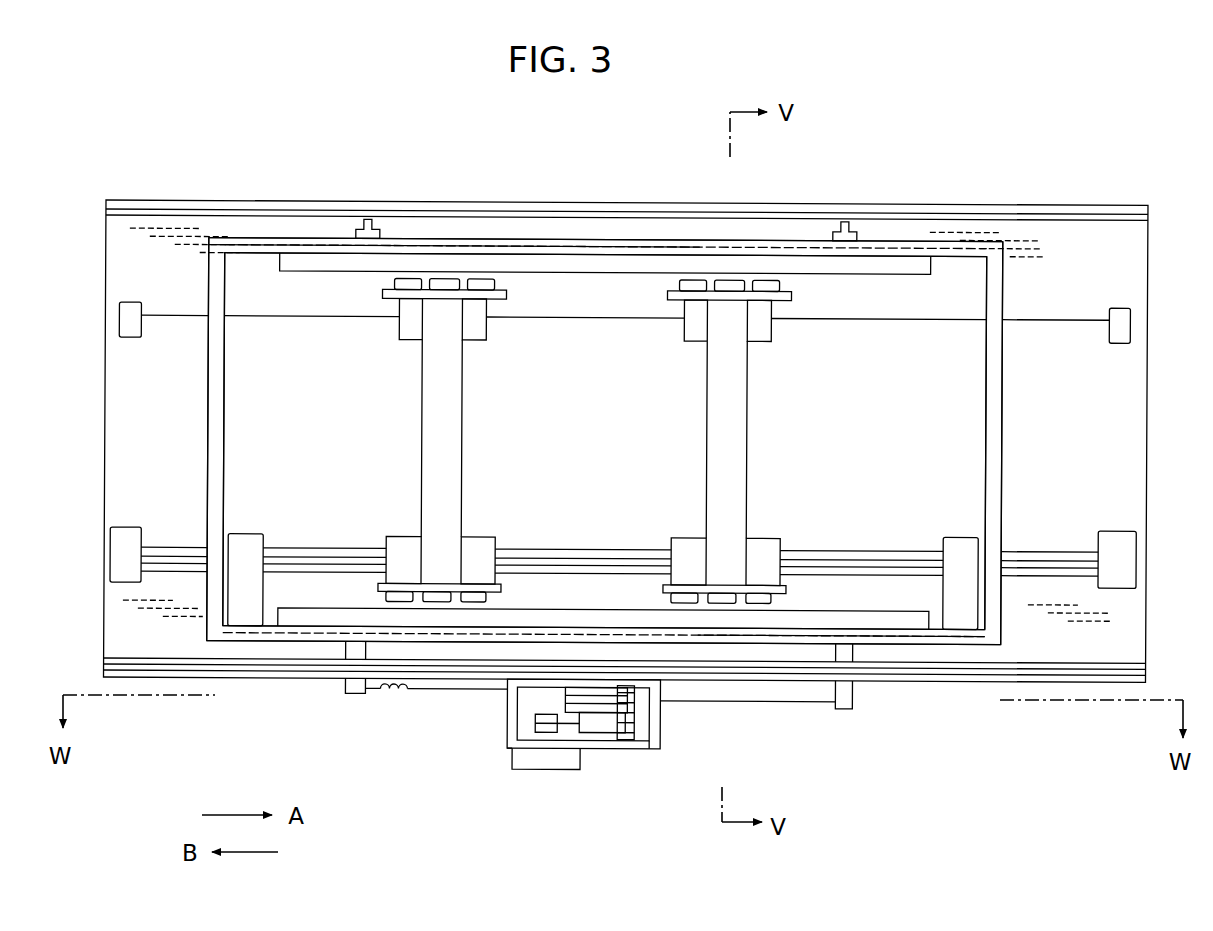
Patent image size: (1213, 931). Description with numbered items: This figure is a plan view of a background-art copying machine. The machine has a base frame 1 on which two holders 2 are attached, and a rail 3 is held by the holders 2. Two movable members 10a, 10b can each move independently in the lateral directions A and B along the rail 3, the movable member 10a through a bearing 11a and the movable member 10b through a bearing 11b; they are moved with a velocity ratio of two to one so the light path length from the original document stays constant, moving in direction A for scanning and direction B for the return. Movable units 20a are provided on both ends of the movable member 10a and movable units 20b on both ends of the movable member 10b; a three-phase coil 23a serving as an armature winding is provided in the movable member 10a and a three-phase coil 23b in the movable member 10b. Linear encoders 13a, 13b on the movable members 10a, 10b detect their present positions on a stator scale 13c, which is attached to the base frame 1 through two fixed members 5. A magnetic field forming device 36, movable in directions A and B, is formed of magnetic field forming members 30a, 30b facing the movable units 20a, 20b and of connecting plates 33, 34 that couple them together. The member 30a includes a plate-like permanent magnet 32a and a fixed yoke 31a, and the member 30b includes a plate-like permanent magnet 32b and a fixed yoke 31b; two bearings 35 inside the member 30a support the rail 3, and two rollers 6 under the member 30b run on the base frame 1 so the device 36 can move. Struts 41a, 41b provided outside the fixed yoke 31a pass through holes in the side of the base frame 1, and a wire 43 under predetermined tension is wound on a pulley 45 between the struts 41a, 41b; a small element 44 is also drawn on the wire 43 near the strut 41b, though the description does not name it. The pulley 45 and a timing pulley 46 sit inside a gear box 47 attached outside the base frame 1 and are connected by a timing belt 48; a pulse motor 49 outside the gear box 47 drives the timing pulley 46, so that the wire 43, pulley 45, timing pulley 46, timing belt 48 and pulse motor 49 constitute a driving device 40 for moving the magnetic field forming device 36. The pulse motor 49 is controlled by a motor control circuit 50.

The base frame 1 is at (178, 200).
The holder 2 is at (140, 527).
The rail 3 is at (1040, 547).
The fixed member 5 is at (120, 312).
The roller 6 is at (370, 217).
The movable member 10a is at (748, 437).
The movable member 10b is at (465, 437).
The bearing 11a is at (770, 540).
The bearing 11b is at (484, 540).
The linear encoder 13a is at (762, 330).
The linear encoder 13b is at (475, 330).
The stator scale 13c is at (885, 318).
The movable unit 20a is at (797, 292).
The movable unit 20b is at (508, 292).
The three-phase coil 23a is at (722, 277).
The three-phase coil 23b is at (438, 277).
The magnetic field forming member 30a is at (903, 632).
The magnetic field forming member 30b is at (968, 238).
The fixed yoke 31a is at (948, 648).
The fixed yoke 31b is at (250, 238).
The plate-like permanent magnet 32a is at (313, 613).
The plate-like permanent magnet 32b is at (903, 256).
The connecting plate 33 is at (209, 388).
The connecting plate 34 is at (1003, 388).
The bearing 35 is at (258, 533).
The magnetic field forming device 36 is at (180, 436).
The driving device 40 is at (445, 770).
The strut 41a is at (853, 707).
The strut 41b is at (348, 693).
The wire 43 is at (778, 700).
The spring 44 is at (395, 690).
The pulley 45 is at (640, 712).
The timing pulley 46 is at (545, 730).
The gear box 47 is at (510, 730).
The timing belt 48 is at (612, 740).
The pulse motor 49 is at (557, 767).
The motor control circuit 50 is at (668, 760).